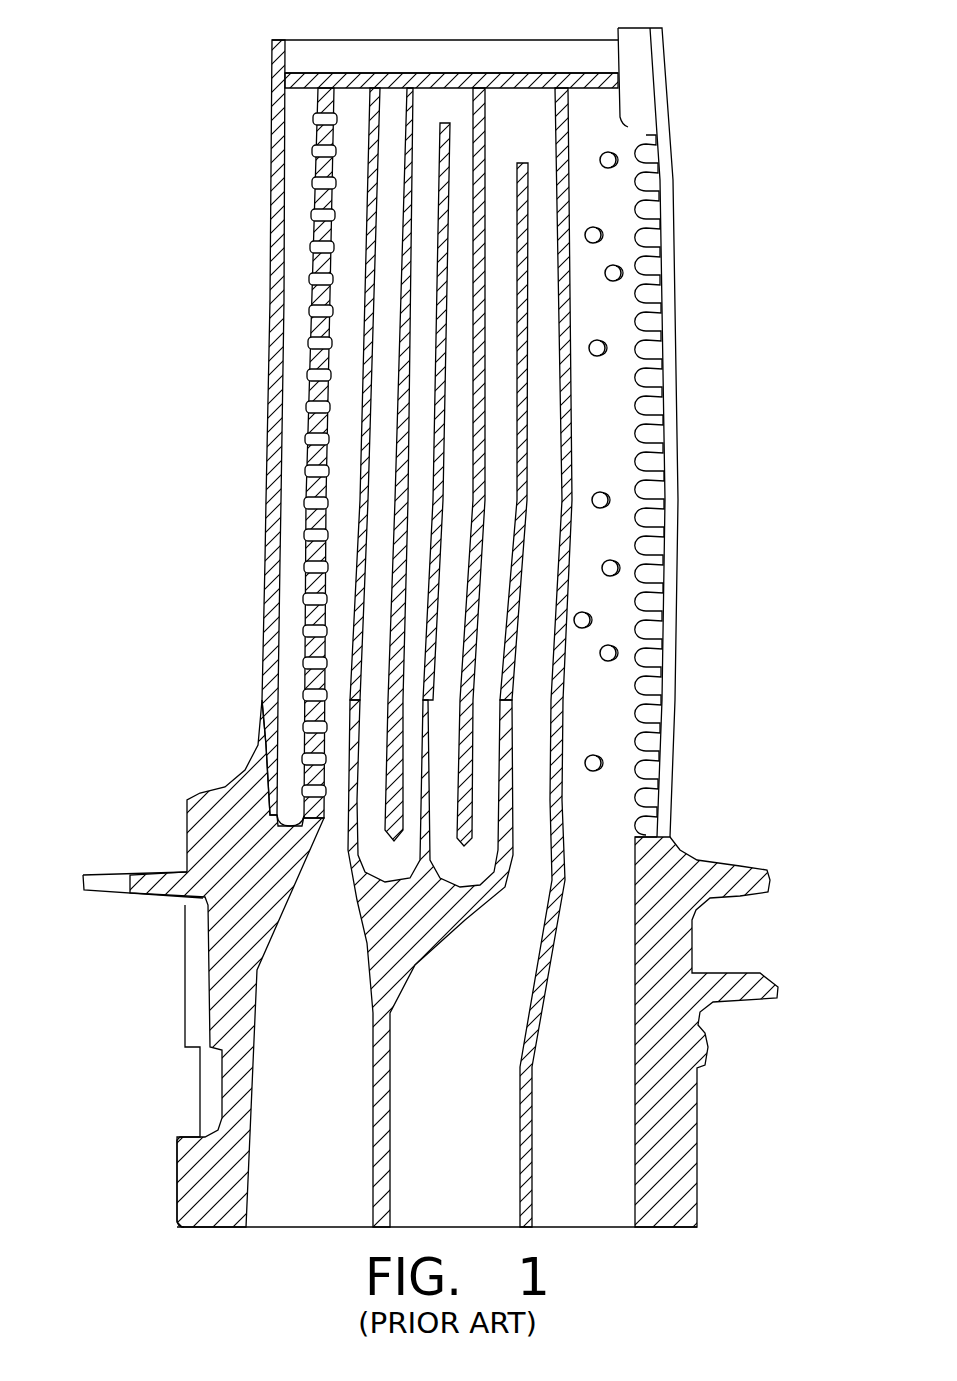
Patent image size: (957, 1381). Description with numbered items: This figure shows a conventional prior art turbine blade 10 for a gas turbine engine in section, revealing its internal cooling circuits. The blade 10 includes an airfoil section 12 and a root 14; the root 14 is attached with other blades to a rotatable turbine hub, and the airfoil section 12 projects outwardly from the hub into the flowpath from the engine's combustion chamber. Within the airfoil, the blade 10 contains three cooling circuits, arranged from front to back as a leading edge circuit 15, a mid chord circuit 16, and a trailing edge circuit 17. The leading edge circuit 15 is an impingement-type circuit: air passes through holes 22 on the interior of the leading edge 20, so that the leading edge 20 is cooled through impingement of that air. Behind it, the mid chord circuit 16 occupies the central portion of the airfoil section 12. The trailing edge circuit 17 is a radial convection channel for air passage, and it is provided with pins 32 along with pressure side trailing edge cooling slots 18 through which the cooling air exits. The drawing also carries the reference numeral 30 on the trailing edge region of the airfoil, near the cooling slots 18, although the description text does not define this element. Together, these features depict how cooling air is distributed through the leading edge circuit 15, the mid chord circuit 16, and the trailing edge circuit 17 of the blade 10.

The turbine blade 10 is at (130, 123).
The airfoil section 12 is at (672, 197).
The root 14 is at (185, 985).
The leading edge circuit 15 is at (300, 108).
The mid chord circuit 16 is at (430, 107).
The trailing edge circuit 17 is at (535, 103).
The pressure side trailing edge cooling slots 18 is at (650, 723).
The leading edge 20 is at (268, 415).
The holes 22 is at (320, 275).
The trailing edge 30 is at (678, 478).
The pins 32 is at (607, 348).